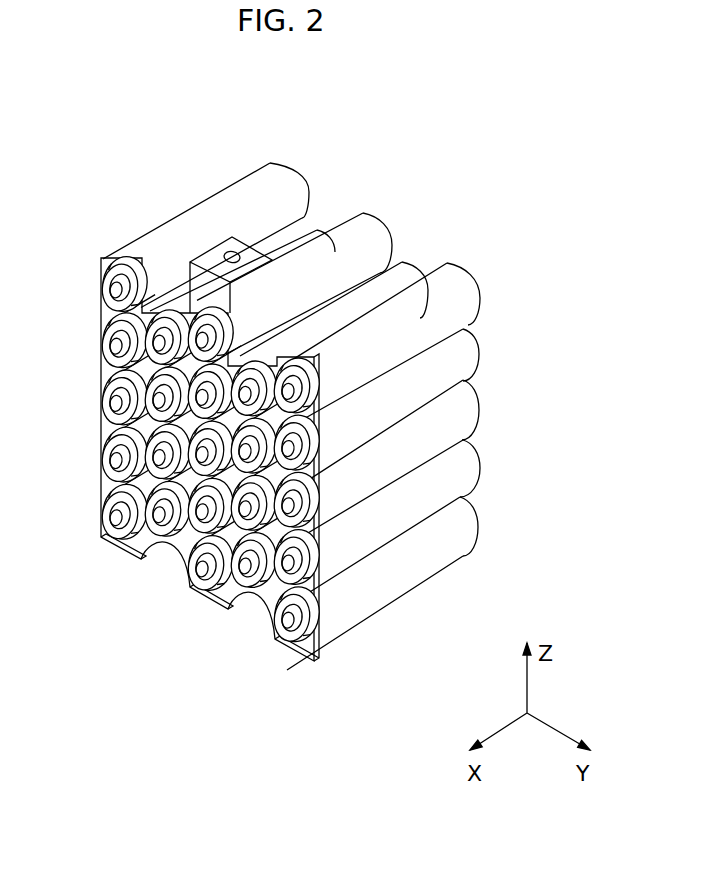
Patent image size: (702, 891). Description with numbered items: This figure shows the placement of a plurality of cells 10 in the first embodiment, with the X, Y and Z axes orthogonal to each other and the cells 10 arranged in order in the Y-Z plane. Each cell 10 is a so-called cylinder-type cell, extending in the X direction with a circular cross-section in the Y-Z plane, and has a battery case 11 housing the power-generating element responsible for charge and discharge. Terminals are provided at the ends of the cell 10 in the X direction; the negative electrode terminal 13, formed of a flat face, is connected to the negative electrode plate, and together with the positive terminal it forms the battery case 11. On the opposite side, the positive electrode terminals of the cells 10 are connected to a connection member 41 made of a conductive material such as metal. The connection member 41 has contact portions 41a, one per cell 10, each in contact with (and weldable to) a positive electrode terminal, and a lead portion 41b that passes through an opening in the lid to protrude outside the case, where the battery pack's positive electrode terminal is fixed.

The cell 10 is at (258, 169).
The battery case 11 is at (245, 208).
The negative electrode terminal 13 is at (305, 178).
The connection member 41 is at (100, 421).
The contact portion 41a is at (118, 290).
The lead portion 41b is at (222, 257).